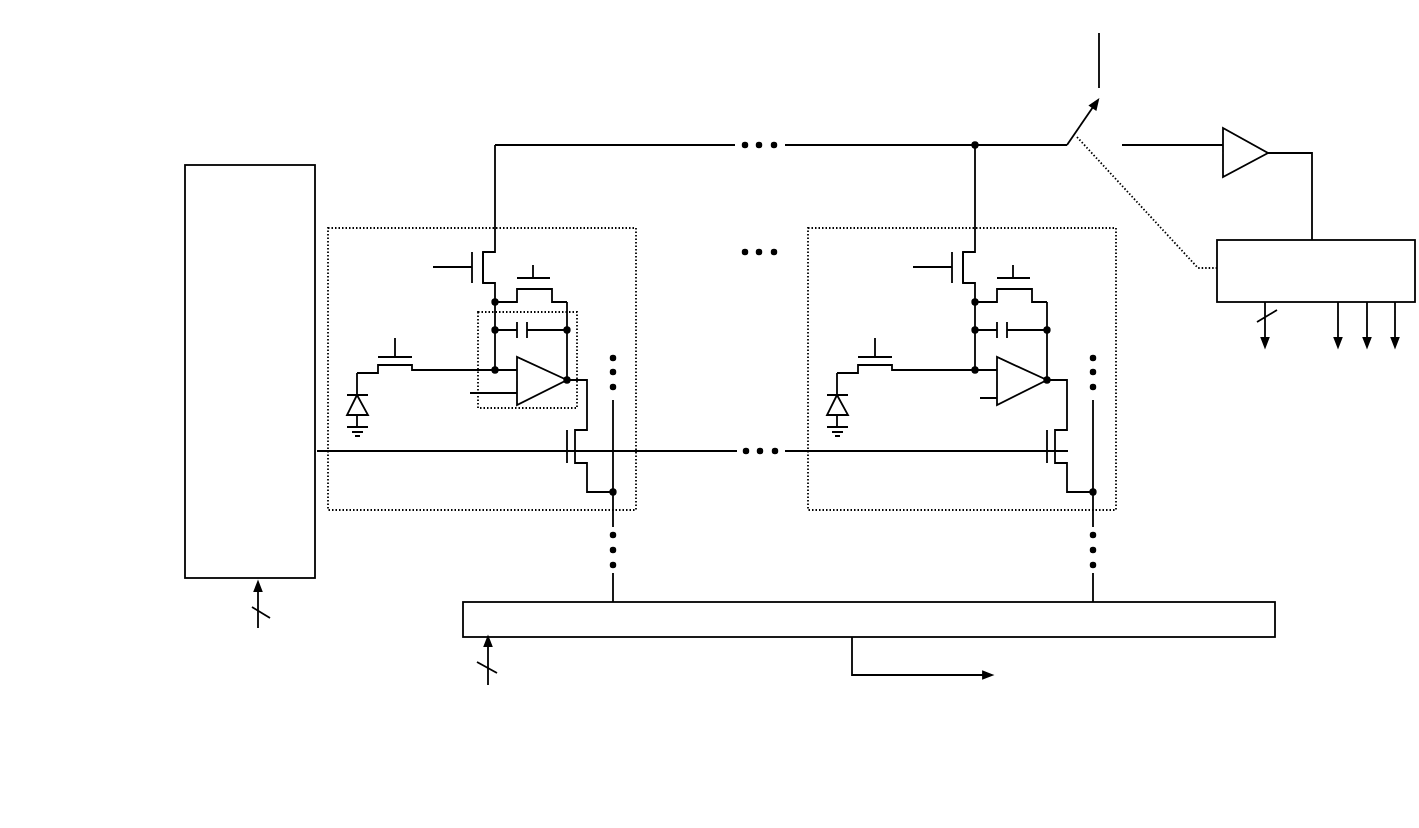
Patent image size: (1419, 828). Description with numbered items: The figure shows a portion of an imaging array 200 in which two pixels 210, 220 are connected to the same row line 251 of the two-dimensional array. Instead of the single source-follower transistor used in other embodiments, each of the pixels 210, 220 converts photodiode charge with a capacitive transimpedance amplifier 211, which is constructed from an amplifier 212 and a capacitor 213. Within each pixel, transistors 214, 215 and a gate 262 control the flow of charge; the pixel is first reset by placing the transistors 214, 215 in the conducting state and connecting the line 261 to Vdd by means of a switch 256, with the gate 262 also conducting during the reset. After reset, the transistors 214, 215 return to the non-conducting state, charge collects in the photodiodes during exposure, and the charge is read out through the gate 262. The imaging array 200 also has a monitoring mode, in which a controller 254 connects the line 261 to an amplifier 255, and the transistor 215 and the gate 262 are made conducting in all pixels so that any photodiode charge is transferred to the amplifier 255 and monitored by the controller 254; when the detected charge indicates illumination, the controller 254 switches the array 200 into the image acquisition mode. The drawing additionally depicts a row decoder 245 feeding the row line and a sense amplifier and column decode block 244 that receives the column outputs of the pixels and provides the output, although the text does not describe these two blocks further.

The imaging array 200 is at (403, 75).
The pixel 210 is at (382, 229).
The pixel 220 is at (893, 228).
The capacitive transimpedance amplifier 211 is at (582, 337).
The amplifier 212 is at (537, 387).
The capacitor 213 is at (503, 378).
The transistor 214 is at (523, 279).
The transistor 215 is at (488, 250).
The gate 262 is at (386, 367).
The row decoder 245 is at (262, 165).
The sense amplifiers / column decode 244 is at (946, 602).
The row line 251 is at (723, 452).
The line 261 is at (642, 144).
The switch 256 is at (1060, 143).
The amplifier 255 is at (1242, 128).
The controller 254 is at (1393, 243).